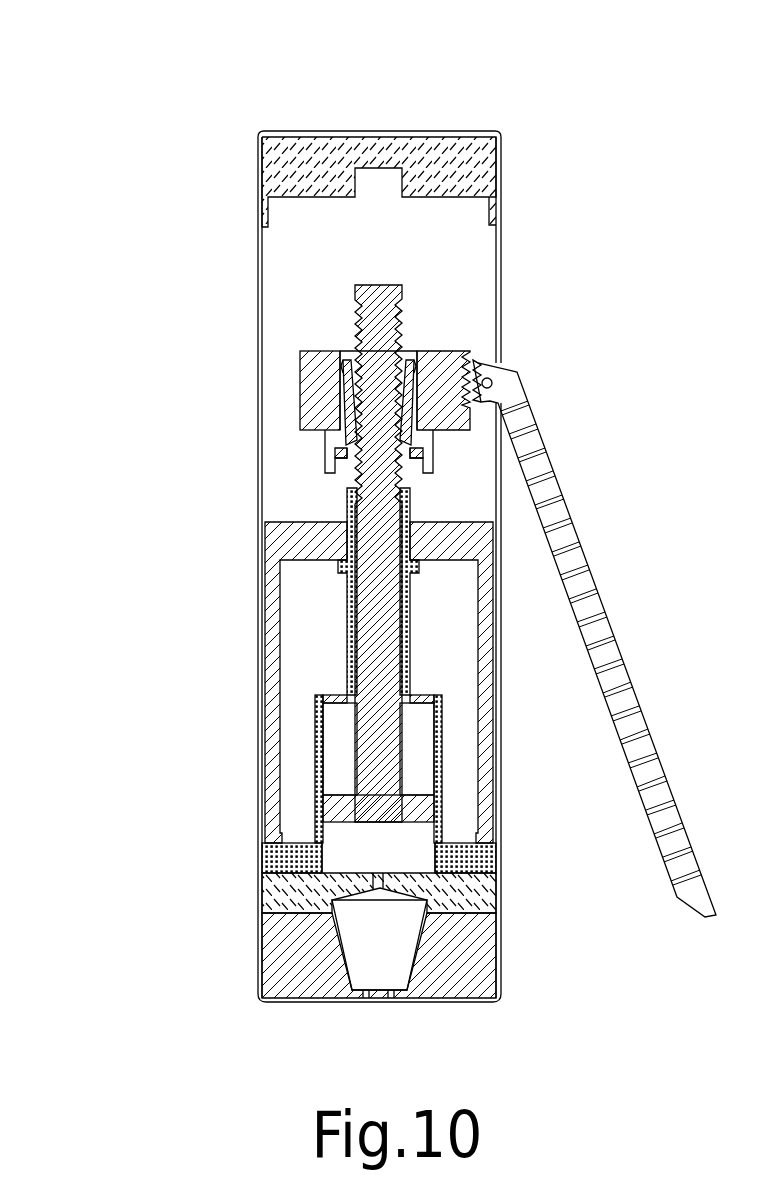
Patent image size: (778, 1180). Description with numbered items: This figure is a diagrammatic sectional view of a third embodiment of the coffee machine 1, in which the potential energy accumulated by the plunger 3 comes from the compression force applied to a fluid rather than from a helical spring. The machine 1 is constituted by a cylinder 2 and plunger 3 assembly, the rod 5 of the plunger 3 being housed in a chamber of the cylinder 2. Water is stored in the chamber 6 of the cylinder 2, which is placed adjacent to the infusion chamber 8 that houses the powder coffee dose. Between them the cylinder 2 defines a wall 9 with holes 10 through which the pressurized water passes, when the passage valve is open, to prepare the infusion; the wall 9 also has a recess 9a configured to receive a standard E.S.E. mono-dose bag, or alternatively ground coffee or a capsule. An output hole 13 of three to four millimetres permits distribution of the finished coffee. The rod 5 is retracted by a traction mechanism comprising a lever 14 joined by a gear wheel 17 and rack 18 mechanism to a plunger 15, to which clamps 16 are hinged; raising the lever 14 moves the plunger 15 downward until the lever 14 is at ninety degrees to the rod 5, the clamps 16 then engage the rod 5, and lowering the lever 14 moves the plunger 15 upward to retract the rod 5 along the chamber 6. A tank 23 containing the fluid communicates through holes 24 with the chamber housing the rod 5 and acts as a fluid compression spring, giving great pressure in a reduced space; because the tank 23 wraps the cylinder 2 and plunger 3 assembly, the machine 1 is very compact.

The machine 1 is at (594, 142).
The cylinder 2 is at (320, 750).
The plunger 3 is at (325, 815).
The rod 5 is at (367, 478).
The chamber 6 is at (403, 853).
The infusion chamber 8 is at (377, 947).
The wall 9 is at (460, 900).
The recess 9a is at (427, 898).
The holes 10 is at (372, 887).
The output hole 13 is at (390, 1000).
The lever 14 is at (578, 555).
The plunger 15 is at (318, 385).
The clamps 16 is at (348, 378).
The gear wheel 17 is at (484, 362).
The rack 18 is at (470, 355).
The tank 23 is at (272, 600).
The holes 24 is at (330, 697).